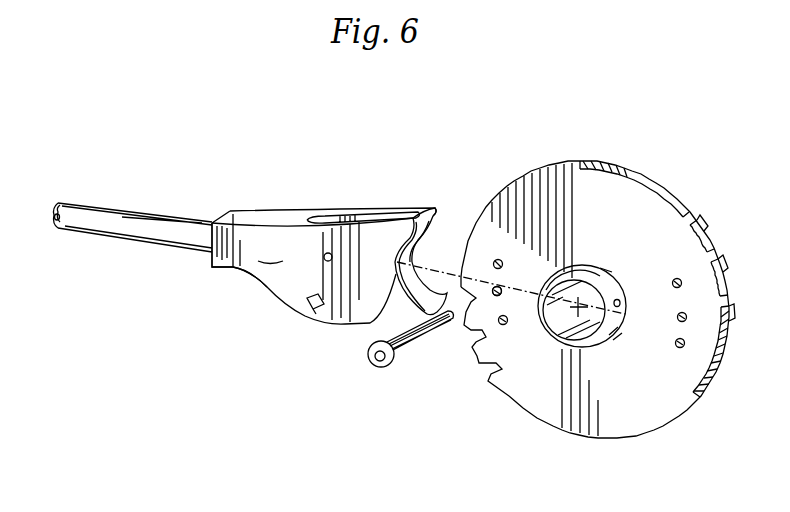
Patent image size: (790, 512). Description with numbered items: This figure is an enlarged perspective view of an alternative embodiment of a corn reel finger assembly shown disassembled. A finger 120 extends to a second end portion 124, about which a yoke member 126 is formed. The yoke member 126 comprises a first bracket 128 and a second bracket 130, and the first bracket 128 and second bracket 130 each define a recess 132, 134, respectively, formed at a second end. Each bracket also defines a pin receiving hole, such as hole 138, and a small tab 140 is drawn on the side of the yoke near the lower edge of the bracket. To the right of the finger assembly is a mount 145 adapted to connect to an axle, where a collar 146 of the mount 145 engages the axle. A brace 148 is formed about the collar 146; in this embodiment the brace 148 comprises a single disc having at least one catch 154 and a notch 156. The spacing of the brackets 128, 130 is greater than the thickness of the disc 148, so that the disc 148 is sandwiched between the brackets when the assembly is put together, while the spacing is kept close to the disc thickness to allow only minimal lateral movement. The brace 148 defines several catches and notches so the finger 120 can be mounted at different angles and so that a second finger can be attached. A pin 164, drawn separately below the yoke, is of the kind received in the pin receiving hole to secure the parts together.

The finger 120 is at (160, 212).
The second end portion 124 is at (287, 198).
The yoke member 126 is at (248, 290).
The first bracket 128 is at (271, 252).
The second bracket 130 is at (405, 204).
The recess 132 is at (395, 302).
The recess 134 is at (440, 233).
The pin receiving hole 138 is at (343, 228).
The tab 140 is at (307, 312).
The mount 145 is at (699, 199).
The collar 146 is at (603, 278).
The brace 148 is at (598, 312).
The catch 154 is at (494, 297).
The notch 156 is at (513, 373).
The pin 164 is at (407, 357).